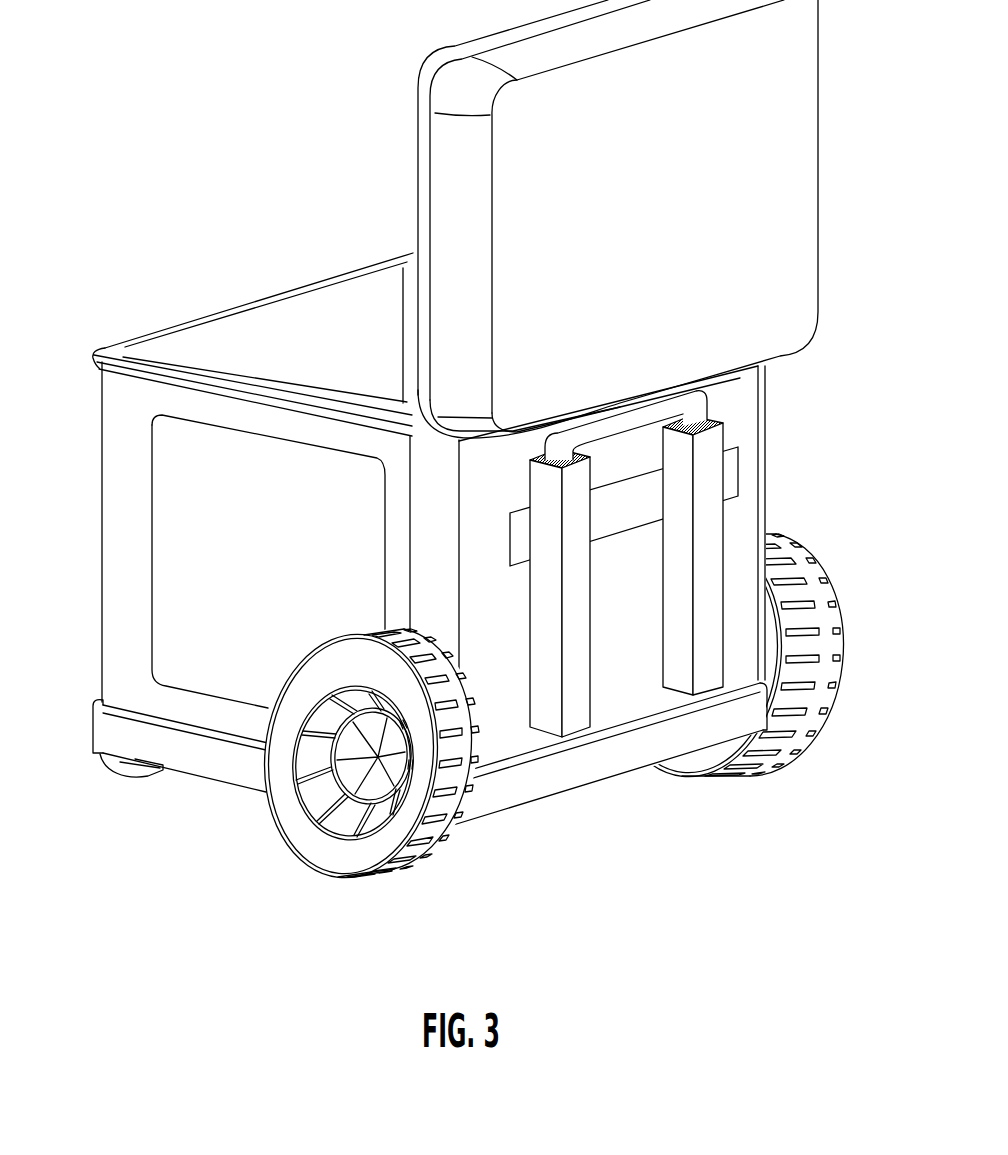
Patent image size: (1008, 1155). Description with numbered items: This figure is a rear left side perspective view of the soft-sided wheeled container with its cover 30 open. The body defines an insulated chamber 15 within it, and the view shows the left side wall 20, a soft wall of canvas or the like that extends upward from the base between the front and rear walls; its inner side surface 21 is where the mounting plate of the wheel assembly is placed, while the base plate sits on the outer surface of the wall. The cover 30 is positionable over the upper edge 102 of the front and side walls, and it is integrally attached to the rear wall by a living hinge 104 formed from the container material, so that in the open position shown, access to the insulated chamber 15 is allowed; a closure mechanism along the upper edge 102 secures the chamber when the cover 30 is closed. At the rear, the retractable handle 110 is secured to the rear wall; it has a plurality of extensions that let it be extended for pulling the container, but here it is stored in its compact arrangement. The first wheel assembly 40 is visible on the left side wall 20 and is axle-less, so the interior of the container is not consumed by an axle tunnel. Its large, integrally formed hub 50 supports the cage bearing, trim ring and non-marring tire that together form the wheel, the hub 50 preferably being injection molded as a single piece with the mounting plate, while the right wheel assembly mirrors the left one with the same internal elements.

The insulated chamber 15 is at (338, 322).
The left side wall 20 is at (102, 653).
The inner side surface 21 is at (220, 370).
The cover 30 is at (802, 128).
The first wheel assembly 40 is at (347, 877).
The hub 50 is at (388, 834).
The upper edge 102 is at (223, 305).
The living hinge 104 is at (693, 403).
The retractable handle 110 is at (710, 450).